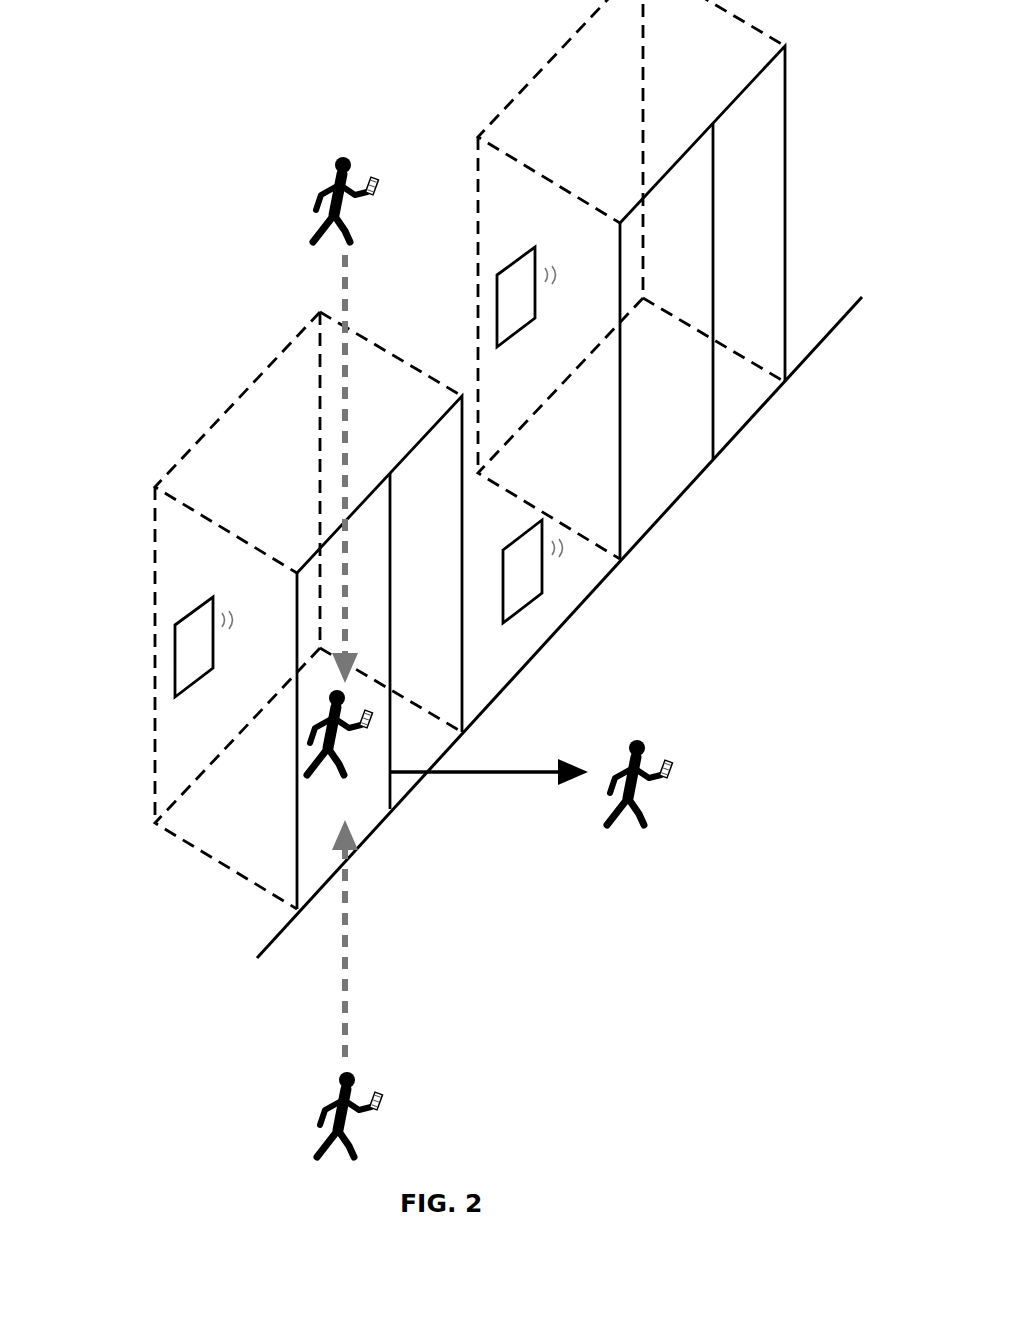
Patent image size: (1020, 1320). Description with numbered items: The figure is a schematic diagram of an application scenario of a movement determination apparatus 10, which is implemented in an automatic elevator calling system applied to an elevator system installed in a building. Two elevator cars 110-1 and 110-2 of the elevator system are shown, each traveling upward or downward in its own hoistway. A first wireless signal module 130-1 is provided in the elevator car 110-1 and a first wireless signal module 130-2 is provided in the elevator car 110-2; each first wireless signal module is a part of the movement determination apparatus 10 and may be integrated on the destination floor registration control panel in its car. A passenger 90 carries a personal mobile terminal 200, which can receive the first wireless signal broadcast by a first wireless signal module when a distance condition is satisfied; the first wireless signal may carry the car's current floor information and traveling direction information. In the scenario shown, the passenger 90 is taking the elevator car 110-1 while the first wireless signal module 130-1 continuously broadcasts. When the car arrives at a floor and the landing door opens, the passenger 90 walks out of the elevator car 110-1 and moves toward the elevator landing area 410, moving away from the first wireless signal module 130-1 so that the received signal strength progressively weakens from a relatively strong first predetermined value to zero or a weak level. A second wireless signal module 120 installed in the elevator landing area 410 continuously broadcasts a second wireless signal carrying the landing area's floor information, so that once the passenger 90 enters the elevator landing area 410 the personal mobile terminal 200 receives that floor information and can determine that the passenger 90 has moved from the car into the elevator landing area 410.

The movement determination apparatus 10 is at (155, 184).
The passenger 90 is at (322, 178).
The personal mobile terminal 200 is at (378, 176).
The elevator car 110-1 is at (413, 372).
The elevator car 110-2 is at (708, 122).
The first wireless signal module 130-1 is at (175, 637).
The first wireless signal module 130-2 is at (500, 264).
The second wireless signal module 120 is at (527, 607).
The elevator landing area 410 is at (772, 616).